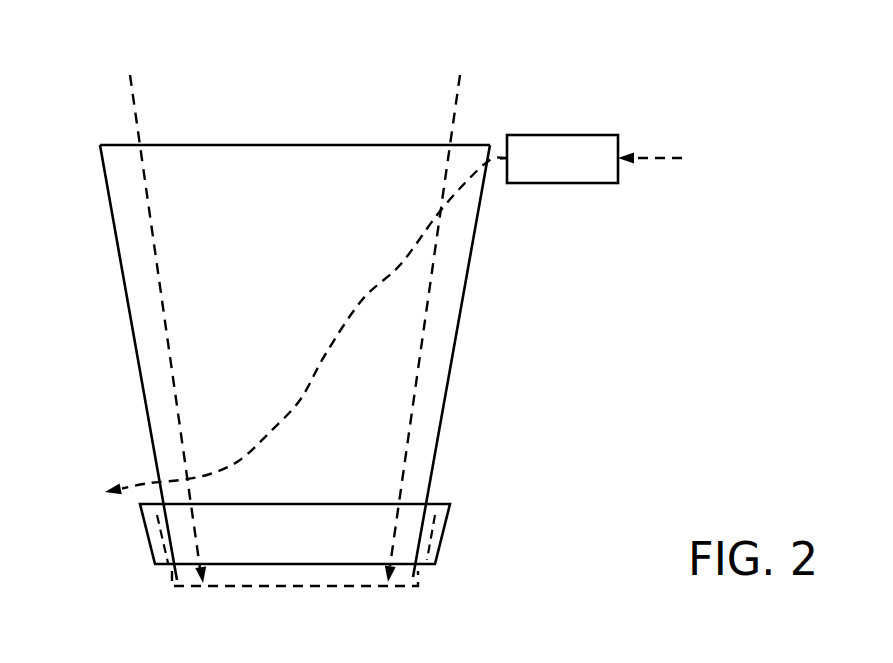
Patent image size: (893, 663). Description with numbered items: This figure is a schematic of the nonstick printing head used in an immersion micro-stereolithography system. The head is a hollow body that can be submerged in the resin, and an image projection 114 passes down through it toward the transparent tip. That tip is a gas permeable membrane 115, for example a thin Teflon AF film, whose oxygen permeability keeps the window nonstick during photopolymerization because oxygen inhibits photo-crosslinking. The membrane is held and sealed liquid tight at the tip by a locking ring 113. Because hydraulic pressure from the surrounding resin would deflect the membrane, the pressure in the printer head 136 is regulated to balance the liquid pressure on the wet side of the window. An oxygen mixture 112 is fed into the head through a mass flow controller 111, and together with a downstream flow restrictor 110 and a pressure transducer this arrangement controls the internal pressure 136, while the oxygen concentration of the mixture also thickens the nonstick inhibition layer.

The downstream flow restrictor 110 is at (124, 456).
The mass flow controller 111 is at (563, 183).
The oxygen mixture 112 is at (676, 155).
The locking ring 113 is at (466, 486).
The image projection 114 is at (158, 74).
The gas permeable membrane 115 is at (447, 579).
The pressure in the printer head 136 is at (312, 229).